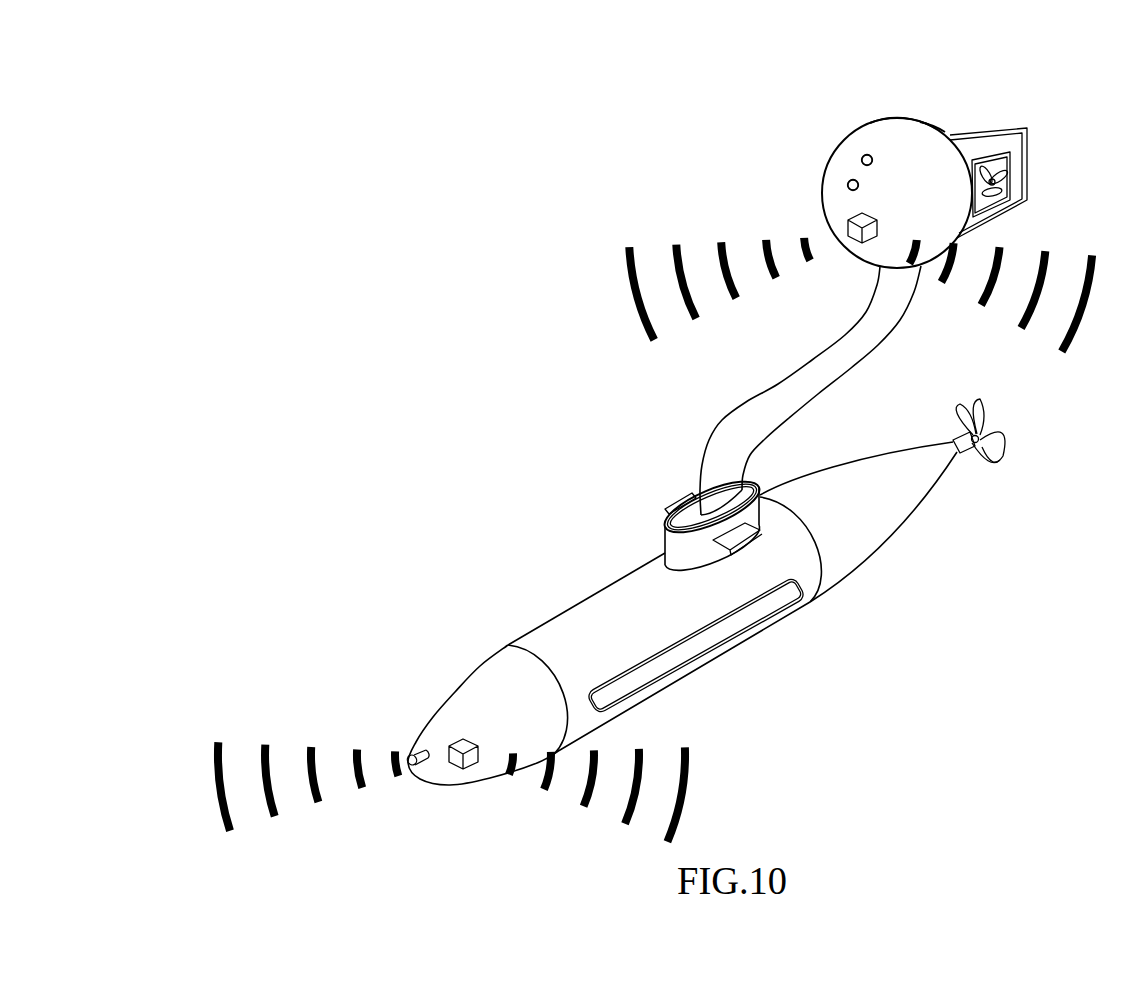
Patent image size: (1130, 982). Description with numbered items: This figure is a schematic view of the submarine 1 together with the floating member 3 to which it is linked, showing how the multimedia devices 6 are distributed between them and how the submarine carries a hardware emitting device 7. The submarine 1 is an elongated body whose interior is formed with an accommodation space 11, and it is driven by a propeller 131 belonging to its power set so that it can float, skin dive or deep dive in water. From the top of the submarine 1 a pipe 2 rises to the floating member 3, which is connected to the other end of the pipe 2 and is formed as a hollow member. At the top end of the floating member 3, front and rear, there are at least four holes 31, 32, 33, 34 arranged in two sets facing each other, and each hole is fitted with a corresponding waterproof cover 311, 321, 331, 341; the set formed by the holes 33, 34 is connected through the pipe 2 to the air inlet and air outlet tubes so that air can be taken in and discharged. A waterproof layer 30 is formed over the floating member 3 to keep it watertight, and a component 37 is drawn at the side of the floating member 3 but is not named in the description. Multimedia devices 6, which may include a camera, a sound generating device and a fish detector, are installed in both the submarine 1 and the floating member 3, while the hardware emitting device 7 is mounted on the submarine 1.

The submarine 1 is at (483, 682).
The accommodation space 11 is at (907, 523).
The propeller 131 is at (990, 433).
The pipe 2 is at (662, 385).
The floating member 3 is at (703, 189).
The waterproof layer 30 is at (887, 117).
The hole 31 is at (864, 156).
The waterproof cover 311 is at (862, 158).
The hole 32 is at (928, 120).
The waterproof cover 321 is at (937, 123).
The hole 33 is at (848, 184).
The waterproof cover 331 is at (848, 190).
The hole 34 is at (950, 133).
The waterproof cover 341 is at (1030, 125).
The thruster propeller 37 is at (1007, 193).
The multimedia devices 6 is at (850, 238).
The hardware emitting device 7 is at (410, 760).